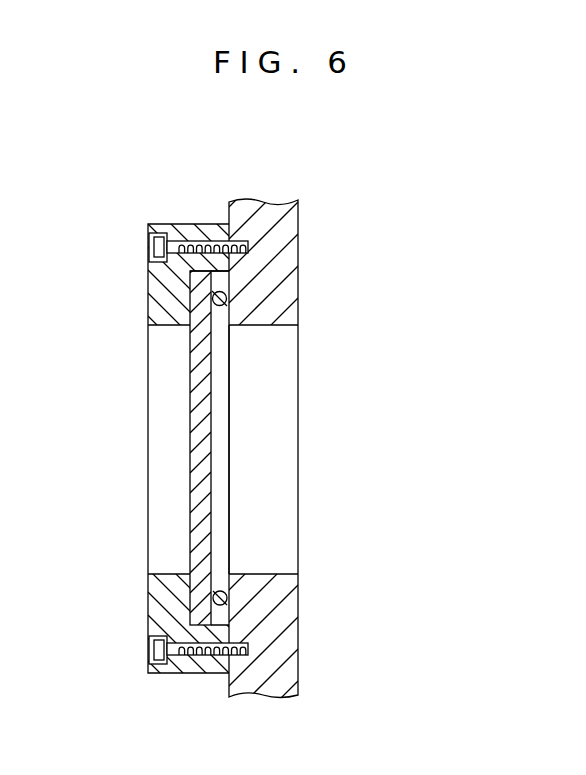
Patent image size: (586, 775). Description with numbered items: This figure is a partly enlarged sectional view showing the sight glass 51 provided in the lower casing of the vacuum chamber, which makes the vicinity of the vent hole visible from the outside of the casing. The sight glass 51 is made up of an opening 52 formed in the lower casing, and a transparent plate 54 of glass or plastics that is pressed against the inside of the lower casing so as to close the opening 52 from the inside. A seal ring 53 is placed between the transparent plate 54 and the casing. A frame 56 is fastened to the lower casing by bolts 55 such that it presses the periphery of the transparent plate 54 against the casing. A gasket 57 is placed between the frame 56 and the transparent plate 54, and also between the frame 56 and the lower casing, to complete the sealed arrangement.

The sight glass 51 is at (273, 376).
The opening 52 is at (287, 422).
The seal ring 53 is at (226, 295).
The transparent plate 54 is at (198, 433).
The bolts 55 is at (152, 247).
The frame 56 is at (157, 293).
The gasket 57 is at (229, 234).